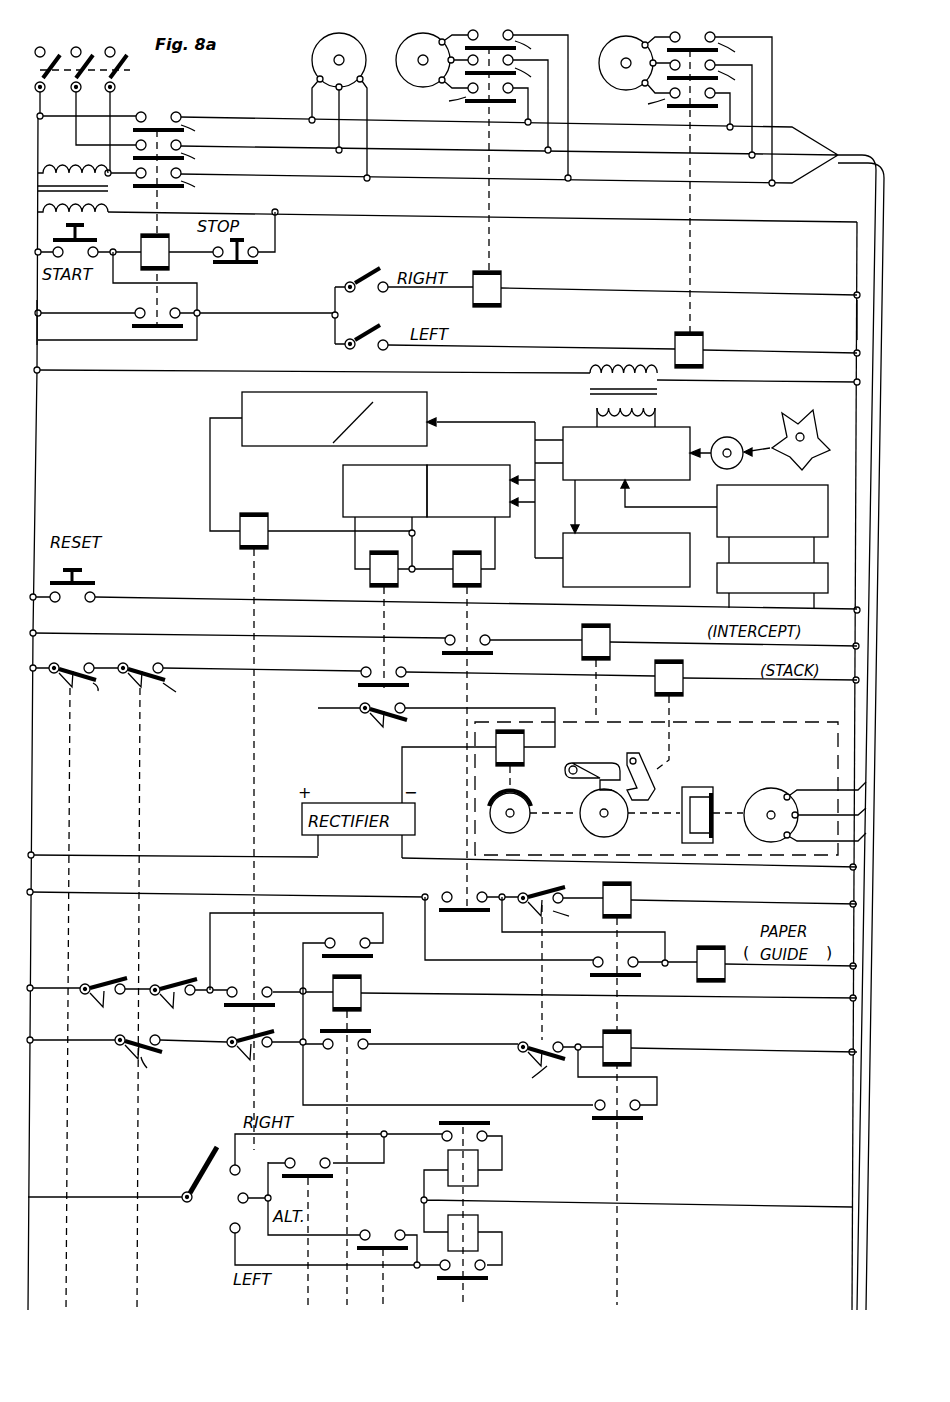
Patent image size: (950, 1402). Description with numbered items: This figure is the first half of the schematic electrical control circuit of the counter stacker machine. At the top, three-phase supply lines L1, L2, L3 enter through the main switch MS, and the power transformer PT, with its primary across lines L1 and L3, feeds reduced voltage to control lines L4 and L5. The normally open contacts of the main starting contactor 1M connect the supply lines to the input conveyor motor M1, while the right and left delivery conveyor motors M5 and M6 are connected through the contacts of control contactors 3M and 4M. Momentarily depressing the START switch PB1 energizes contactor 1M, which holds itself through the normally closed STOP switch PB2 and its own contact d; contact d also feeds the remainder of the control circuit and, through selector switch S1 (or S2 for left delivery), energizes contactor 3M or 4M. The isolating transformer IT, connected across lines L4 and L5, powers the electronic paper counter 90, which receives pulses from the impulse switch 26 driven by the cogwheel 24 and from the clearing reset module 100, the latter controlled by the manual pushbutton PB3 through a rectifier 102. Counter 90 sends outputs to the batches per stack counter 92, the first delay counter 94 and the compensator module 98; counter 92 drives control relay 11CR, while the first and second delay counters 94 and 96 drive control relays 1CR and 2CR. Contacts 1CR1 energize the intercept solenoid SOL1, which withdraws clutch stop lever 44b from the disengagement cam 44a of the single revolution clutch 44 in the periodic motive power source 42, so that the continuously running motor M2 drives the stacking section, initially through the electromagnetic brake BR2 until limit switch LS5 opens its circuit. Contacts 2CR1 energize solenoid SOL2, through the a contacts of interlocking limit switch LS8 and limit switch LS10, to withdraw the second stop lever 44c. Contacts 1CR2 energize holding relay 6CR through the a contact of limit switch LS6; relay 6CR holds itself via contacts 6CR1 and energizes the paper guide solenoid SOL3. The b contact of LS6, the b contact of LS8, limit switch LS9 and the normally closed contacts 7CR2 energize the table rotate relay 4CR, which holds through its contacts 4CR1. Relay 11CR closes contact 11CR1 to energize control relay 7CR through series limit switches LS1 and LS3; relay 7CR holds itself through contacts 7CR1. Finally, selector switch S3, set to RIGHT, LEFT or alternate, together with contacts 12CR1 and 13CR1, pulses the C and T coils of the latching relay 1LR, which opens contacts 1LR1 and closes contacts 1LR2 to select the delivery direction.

The supply line L1 is at (40, 46).
The supply line L2 is at (76, 46).
The supply line L3 is at (110, 46).
The main switch MS is at (125, 79).
The power transformer PT is at (70, 165).
The pushbutton START switch PB1 is at (83, 231).
The main starting contactor 1M is at (170, 258).
The STOP switch PB2 is at (260, 266).
The d contact of contactor 1M d is at (130, 320).
The control line L4 is at (52, 340).
The control line L5 is at (855, 318).
The selector switch S1 is at (365, 270).
The selector switch S2 is at (365, 333).
The control contactor 3M is at (502, 281).
The control contactor 4M is at (704, 338).
The input conveyor motor M1 is at (355, 45).
The right delivery conveyor motor M5 is at (432, 38).
The left delivery conveyor motor M6 is at (638, 43).
The isolating transformer IT is at (588, 393).
The electronic paper counter 90 is at (680, 428).
The impulse switch 26 is at (730, 437).
The cogwheel 24 is at (800, 415).
The compensator module 98 is at (614, 533).
The clearing reset module 100 is at (715, 493).
The rectifier 102 is at (793, 564).
The batches per stack counter 92 is at (240, 404).
The second delay counter 96 is at (342, 475).
The first delay counter 94 is at (488, 464).
The control relay 11CR is at (254, 513).
The control relay 2CR is at (369, 578).
The control relay 1CR is at (483, 580).
The manual pushbutton switch PB3 is at (97, 600).
The contacts of relay 1CR 1CR1 is at (490, 648).
The intercept solenoid SOL1 is at (611, 633).
The limit switch LS10 is at (72, 798).
The interlocking limit switch LS8 is at (140, 775).
The contacts of relay 2CR 2CR1 is at (362, 682).
The solenoid SOL2 is at (684, 670).
The limit switch LS5 is at (382, 727).
The periodic motive power source 42 is at (775, 708).
The electromagnetic brake BR2 is at (527, 781).
The clutch disengagement cam 44a is at (620, 830).
The clutch stop lever 44b is at (595, 750).
The clutch stop lever 44c is at (651, 753).
The single revolution mechanical clutch 44 is at (700, 787).
The stacking section motor M2 is at (773, 788).
The contacts of relay 1CR 1CR2 is at (478, 913).
The limit switch LS6 is at (540, 985).
The holding relay 6CR is at (633, 892).
The contacts of relay 6CR 6CR1 is at (622, 982).
The paper guide solenoid SOL3 is at (718, 930).
The limit switch LS1 is at (113, 977).
The limit switch LS3 is at (190, 977).
The contact of relay 11CR 11CR1 is at (227, 1004).
The control relay 7CR is at (363, 1003).
The contacts of relay 7CR 7CR1 is at (369, 957).
The contacts of relay 7CR 7CR2 is at (356, 1048).
The table rotate control relay 4CR is at (632, 1036).
The contacts of relay 4CR 4CR1 is at (642, 1116).
The limit switch LS9 is at (252, 1050).
The selector switch S3 is at (196, 1163).
The contact of relay 12CR 12CR1 is at (304, 1168).
The contact of relay 13CR 13CR1 is at (384, 1232).
The contacts of latching relay 1LR 1LR1 is at (487, 1124).
The latching relay 1LR is at (490, 1199).
The contacts of latching relay 1LR 1LR2 is at (485, 1276).